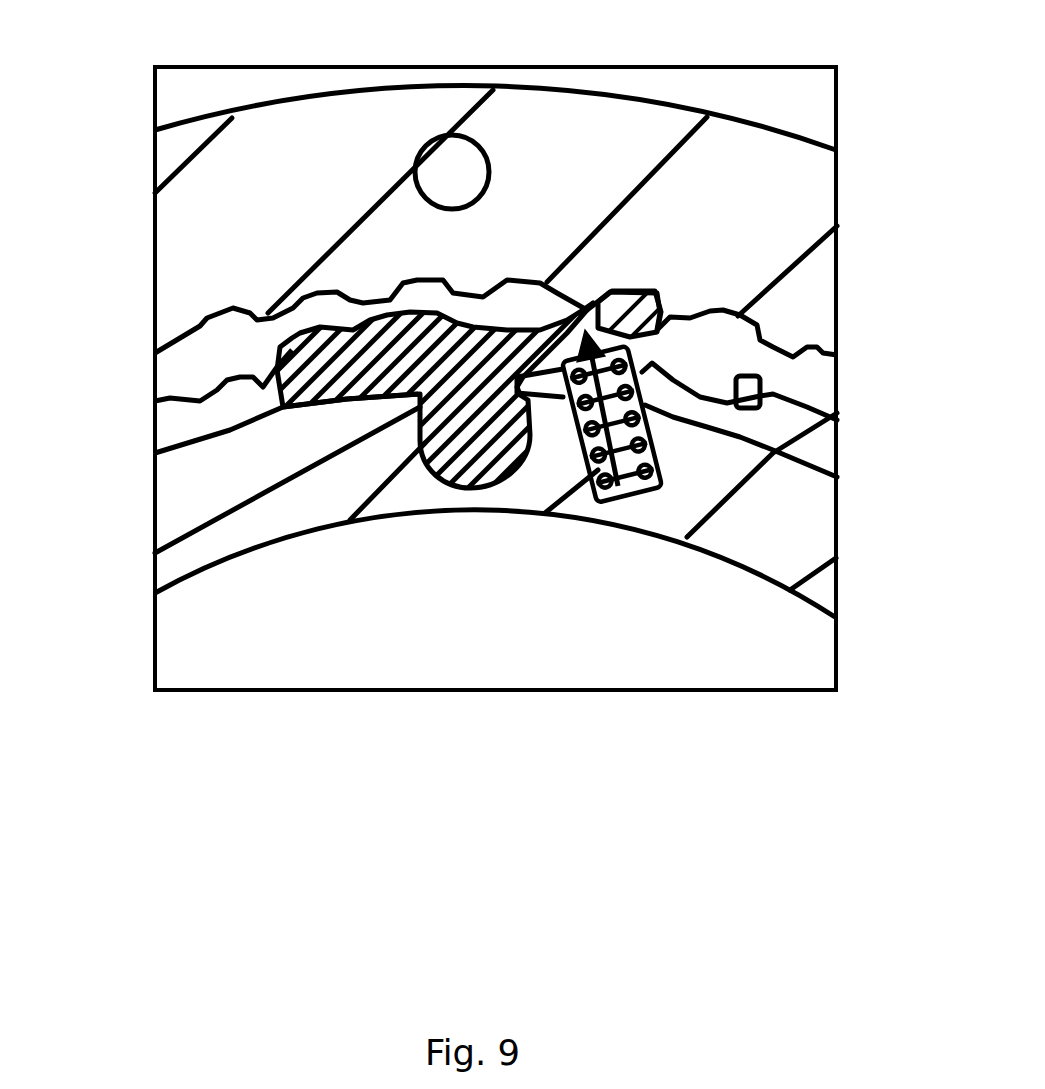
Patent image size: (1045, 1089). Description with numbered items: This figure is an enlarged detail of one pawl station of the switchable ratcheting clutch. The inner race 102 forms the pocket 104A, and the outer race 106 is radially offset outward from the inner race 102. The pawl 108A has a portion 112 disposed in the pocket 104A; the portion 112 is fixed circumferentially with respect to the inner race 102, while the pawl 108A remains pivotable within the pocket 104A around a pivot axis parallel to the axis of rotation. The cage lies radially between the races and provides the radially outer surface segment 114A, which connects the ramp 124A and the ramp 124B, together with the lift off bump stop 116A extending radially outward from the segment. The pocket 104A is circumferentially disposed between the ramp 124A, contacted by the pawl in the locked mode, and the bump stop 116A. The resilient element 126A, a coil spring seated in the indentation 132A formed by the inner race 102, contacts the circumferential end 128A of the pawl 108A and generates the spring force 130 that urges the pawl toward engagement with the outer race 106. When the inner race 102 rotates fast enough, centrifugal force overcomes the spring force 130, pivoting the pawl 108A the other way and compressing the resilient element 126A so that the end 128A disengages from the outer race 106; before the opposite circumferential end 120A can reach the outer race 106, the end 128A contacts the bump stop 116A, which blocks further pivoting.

The inner race 102 is at (259, 548).
The pocket 104A is at (478, 488).
The outer race 106 is at (250, 105).
The pawl 108A is at (421, 312).
The portion 112 is at (417, 447).
The radially outer surface segment 114A is at (673, 372).
The lift off bump stop 116A is at (705, 392).
The circumferential end 120A is at (232, 386).
The ramp 124A is at (174, 423).
The ramp 124B is at (773, 410).
The resilient element 126A is at (560, 500).
The circumferential end 128A is at (638, 292).
The spring force 130 is at (655, 412).
The indentation 132A is at (617, 500).